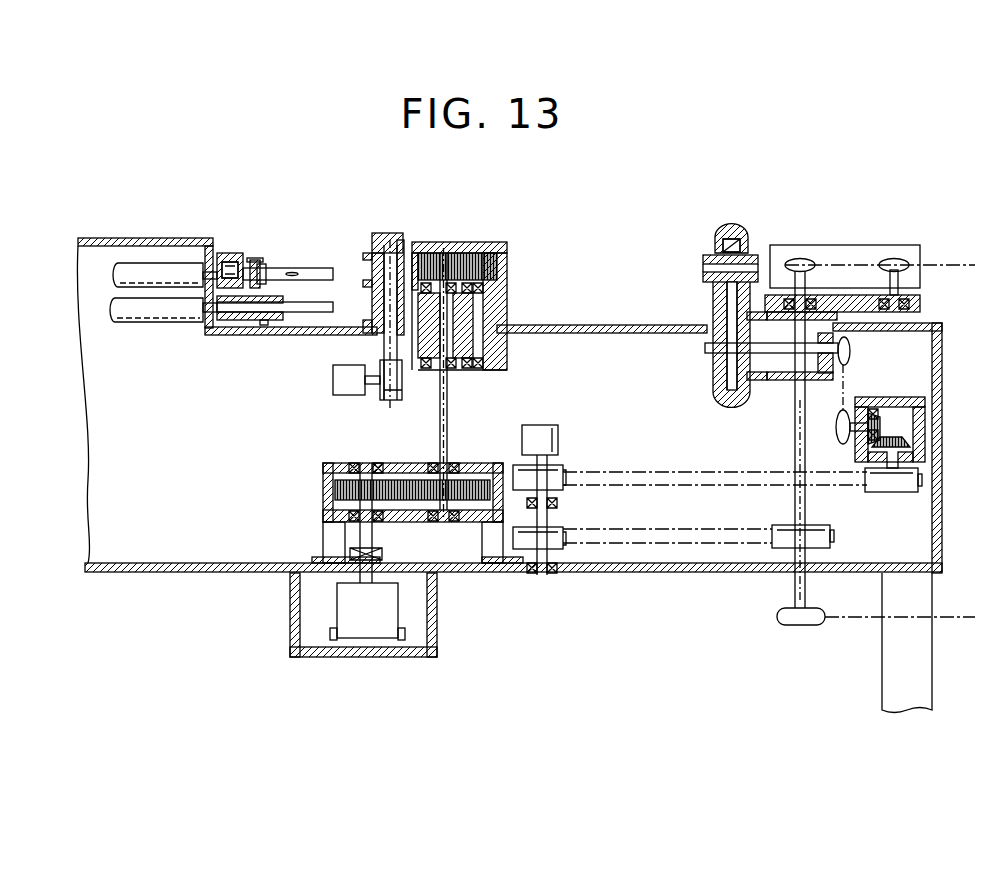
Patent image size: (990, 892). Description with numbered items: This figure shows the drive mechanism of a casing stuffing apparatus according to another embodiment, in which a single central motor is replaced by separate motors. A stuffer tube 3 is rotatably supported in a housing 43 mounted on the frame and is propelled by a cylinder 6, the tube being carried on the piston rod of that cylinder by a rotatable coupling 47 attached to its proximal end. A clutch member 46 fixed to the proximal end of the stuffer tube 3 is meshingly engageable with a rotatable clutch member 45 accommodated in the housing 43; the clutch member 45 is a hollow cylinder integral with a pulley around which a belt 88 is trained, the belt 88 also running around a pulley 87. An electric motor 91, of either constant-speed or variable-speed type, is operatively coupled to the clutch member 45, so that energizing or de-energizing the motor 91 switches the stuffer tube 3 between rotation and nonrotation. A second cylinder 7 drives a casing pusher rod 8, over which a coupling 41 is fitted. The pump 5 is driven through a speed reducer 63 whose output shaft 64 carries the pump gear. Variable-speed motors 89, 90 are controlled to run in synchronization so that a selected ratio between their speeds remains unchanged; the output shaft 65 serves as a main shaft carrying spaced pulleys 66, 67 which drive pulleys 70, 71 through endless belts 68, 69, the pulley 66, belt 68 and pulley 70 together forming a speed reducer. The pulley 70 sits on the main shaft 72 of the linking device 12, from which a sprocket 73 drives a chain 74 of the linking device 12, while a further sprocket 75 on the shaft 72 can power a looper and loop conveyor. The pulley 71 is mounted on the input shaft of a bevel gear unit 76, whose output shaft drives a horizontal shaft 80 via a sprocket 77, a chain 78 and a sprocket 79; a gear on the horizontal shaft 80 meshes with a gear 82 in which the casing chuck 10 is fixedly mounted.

The stuffer tube 3 is at (320, 268).
The pump 5 is at (457, 242).
The cylinder 6 is at (122, 265).
The cylinder 7 is at (157, 300).
The casing pusher rod 8 is at (316, 304).
The casing chuck 10 is at (705, 256).
The linking device 12 is at (818, 244).
The coupling 41 is at (226, 320).
The housing 43 is at (402, 245).
The clutch member 45 is at (385, 245).
The clutch member 46 is at (256, 260).
The rotatable coupling 47 is at (228, 253).
The speed reducer 63 is at (466, 525).
The output shaft 64 is at (448, 393).
The output shaft 65 is at (550, 508).
The pulley 66 is at (562, 549).
The pulley 67 is at (562, 470).
The endless belt 68 is at (690, 545).
The endless belt 69 is at (674, 486).
The driven pulley 70 is at (832, 532).
The driven pulley 71 is at (889, 492).
The main shaft 72 is at (795, 450).
The sprocket 73 is at (795, 260).
The chain 74 is at (846, 262).
The sprocket 75 is at (803, 626).
The bevel gear unit 76 is at (916, 400).
The sprocket 77 is at (839, 428).
The chain 78 is at (848, 392).
The sprocket 79 is at (900, 326).
The horizontal shaft 80 is at (765, 365).
The gear 82 is at (718, 238).
The pulley 87 is at (378, 398).
The belt 88 is at (380, 345).
The variable-speed motor 89 is at (337, 605).
The variable-speed motor 90 is at (558, 432).
The electric motor 91 is at (333, 383).